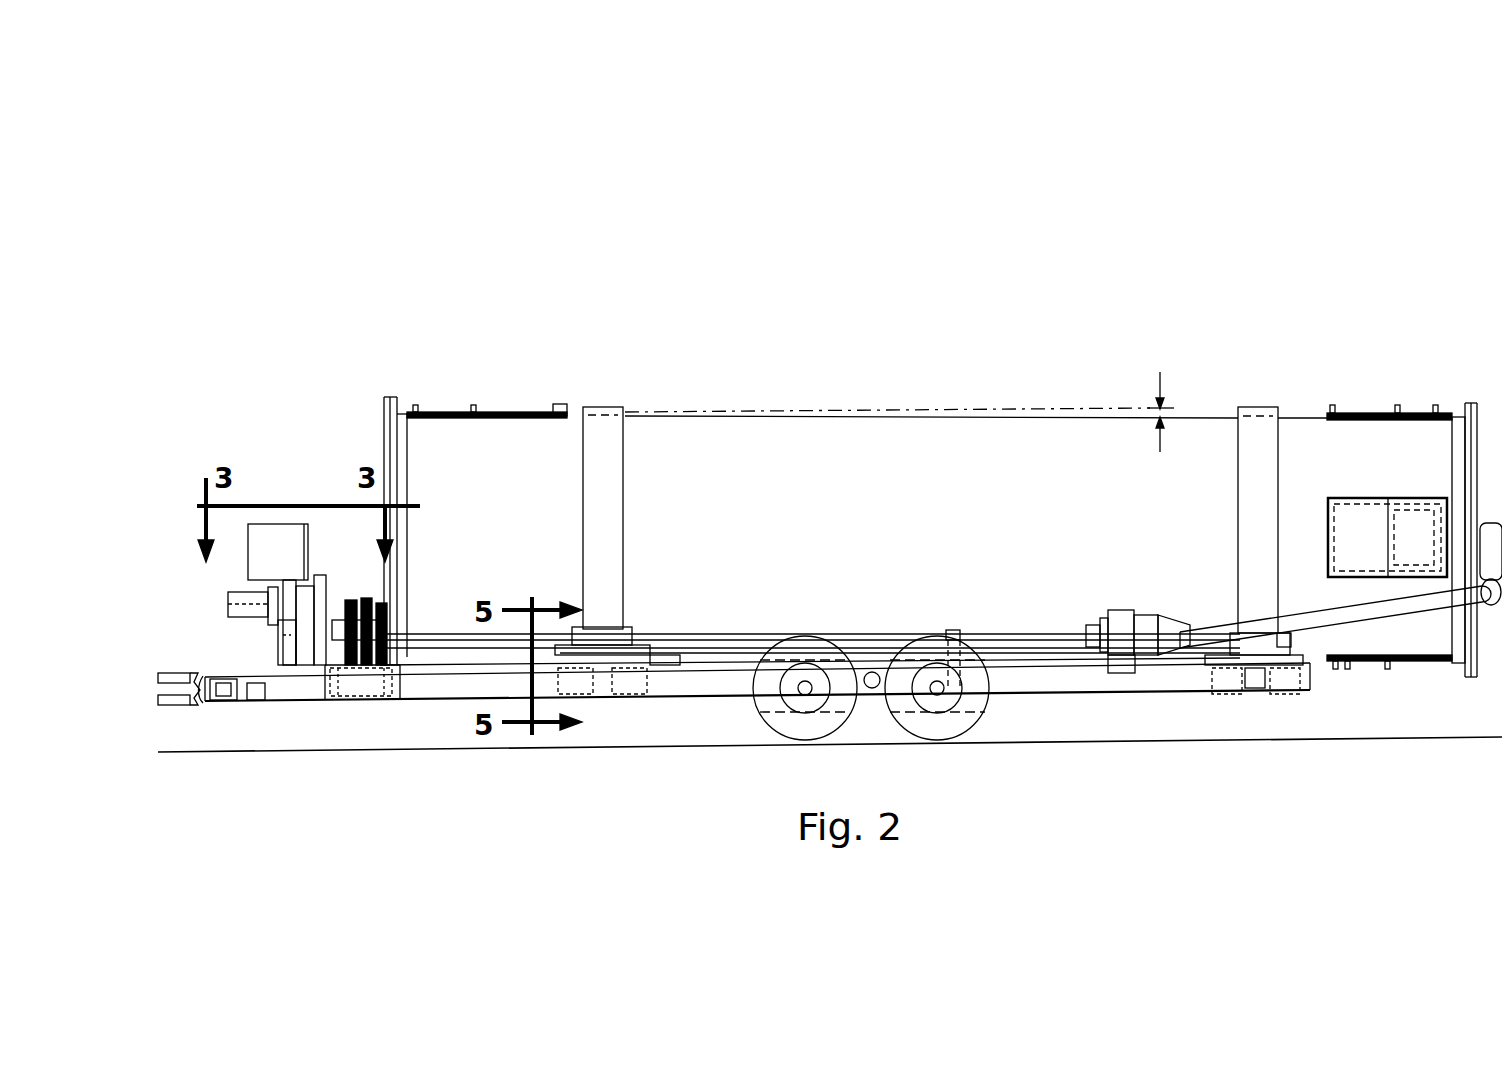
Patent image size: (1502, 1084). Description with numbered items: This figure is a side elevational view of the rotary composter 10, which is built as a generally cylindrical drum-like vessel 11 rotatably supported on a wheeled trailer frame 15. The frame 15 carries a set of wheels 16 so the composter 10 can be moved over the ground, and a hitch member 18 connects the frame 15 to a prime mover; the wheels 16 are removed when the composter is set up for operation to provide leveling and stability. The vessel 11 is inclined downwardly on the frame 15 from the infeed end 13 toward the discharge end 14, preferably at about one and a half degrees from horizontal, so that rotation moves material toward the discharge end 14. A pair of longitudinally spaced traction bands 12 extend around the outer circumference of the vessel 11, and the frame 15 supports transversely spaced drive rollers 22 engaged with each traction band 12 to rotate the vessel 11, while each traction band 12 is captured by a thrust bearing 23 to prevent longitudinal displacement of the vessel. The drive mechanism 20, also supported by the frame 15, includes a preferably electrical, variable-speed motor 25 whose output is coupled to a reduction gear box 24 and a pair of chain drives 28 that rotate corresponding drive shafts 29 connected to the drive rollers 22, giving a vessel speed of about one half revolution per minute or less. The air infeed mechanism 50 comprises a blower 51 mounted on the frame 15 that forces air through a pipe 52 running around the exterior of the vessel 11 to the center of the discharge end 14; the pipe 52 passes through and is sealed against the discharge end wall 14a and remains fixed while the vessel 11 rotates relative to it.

The rotary composter 10 is at (413, 240).
The vessel 11 is at (648, 412).
The traction bands 12 is at (603, 407).
The infeed end 13 is at (404, 325).
The discharge end 14 is at (1416, 388).
The discharge end wall 14a is at (1474, 645).
The trailer frame 15 is at (1048, 692).
The wheels 16 is at (820, 723).
The hitch member 18 is at (172, 673).
The drive mechanism 20 is at (306, 432).
The drive rollers 22 is at (603, 665).
The thrust bearing 23 is at (664, 665).
The reduction gear box 24 is at (303, 678).
The motor 25 is at (245, 612).
The chain drives 28 is at (352, 715).
The drive shafts 29 is at (432, 650).
The air infeed mechanism 50 is at (1490, 455).
The blower 51 is at (1125, 612).
The pipe 52 is at (1376, 610).